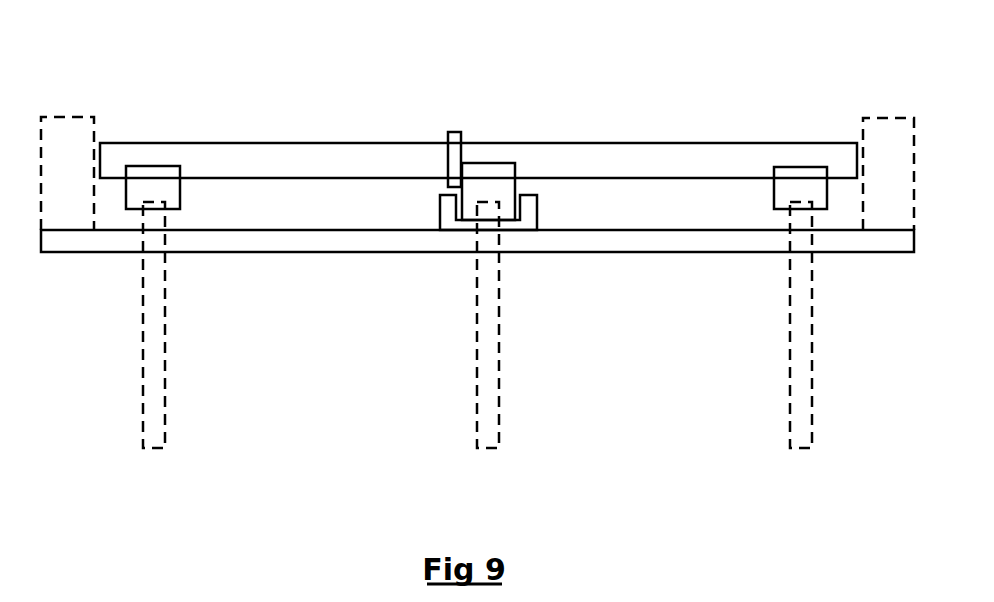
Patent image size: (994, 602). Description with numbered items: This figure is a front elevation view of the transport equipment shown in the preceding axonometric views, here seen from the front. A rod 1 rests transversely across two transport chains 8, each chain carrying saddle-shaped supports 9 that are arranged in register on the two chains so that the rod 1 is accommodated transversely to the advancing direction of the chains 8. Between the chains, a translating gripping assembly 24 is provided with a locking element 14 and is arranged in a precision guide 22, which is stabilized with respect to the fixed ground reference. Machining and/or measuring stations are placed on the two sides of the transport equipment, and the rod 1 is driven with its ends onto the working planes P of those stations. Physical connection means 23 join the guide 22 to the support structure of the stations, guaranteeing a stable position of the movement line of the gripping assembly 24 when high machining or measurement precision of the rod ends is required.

The rod 1 is at (302, 140).
The transport chain 8 is at (153, 284).
The support 9 is at (156, 185).
The locking element 14 is at (450, 126).
The precision guide 22 is at (533, 190).
The physical connection means 23 is at (645, 264).
The mobile gripping assembly 24 is at (488, 176).
The working plane P is at (82, 105).